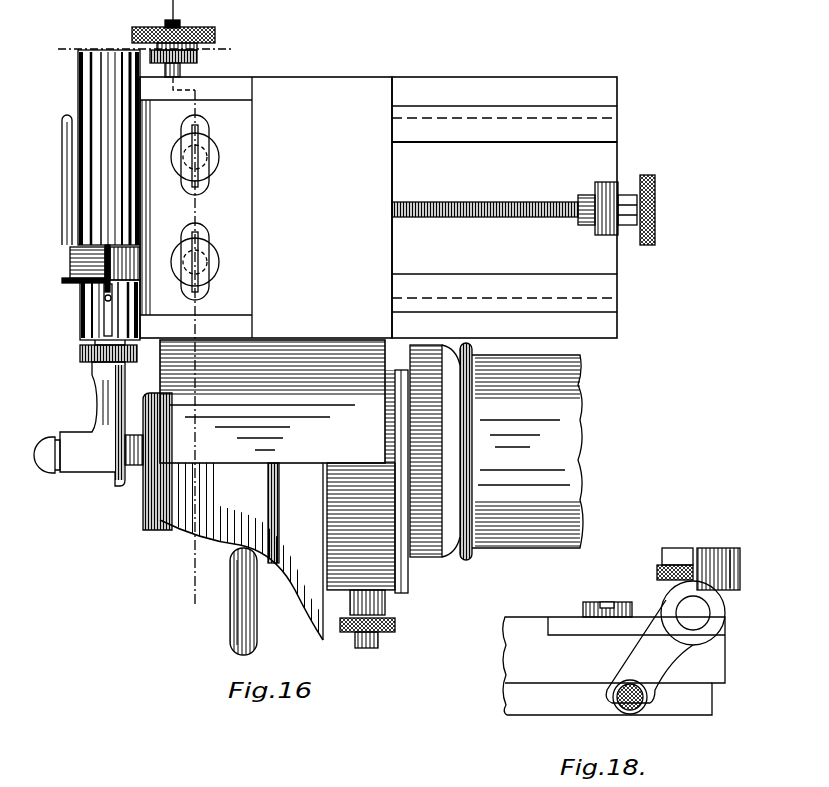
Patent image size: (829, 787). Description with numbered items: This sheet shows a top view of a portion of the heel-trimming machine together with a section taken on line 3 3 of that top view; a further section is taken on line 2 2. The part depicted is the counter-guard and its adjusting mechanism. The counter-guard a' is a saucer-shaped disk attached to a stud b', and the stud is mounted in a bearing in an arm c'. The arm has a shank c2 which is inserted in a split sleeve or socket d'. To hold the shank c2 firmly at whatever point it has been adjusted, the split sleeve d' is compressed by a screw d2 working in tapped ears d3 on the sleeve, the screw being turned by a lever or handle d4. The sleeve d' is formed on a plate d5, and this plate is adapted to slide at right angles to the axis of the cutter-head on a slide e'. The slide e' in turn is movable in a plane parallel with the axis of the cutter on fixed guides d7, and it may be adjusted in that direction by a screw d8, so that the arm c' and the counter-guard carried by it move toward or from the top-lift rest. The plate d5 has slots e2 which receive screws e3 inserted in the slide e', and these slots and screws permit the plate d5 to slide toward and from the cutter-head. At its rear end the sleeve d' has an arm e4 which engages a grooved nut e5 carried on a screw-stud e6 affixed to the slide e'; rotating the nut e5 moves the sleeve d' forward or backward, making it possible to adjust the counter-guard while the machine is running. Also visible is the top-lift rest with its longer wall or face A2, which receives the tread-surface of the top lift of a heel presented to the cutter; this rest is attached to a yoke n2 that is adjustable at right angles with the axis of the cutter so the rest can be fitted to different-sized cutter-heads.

In FIG. 16, the section line 2 2 is at (179, 313).
In FIG. 16, the section line 3 3 is at (136, 317).
In FIG. 16, the screw-stud e6 is at (165, 24).
In FIG. 18, the screw-stud e6 is at (627, 710).
In FIG. 16, the grooved nut e5 is at (205, 28).
In FIG. 18, the grooved nut e5 is at (637, 715).
In FIG. 16, the arm e4 is at (197, 57).
In FIG. 18, the arm e4 is at (650, 662).
In FIG. 16, the slide e' is at (266, 207).
In FIG. 18, the slide e' is at (614, 666).
In FIG. 16, the fixed guides d7 is at (630, 288).
In FIG. 16, the screw d8 is at (523, 203).
In FIG. 16, the lever or handle d4 is at (60, 192).
In FIG. 16, the slots e2 is at (208, 230).
In FIG. 16, the screws e3 is at (207, 265).
In FIG. 18, the screws e3 is at (600, 600).
In FIG. 16, the plate d5 is at (217, 208).
In FIG. 18, the plate d5 is at (591, 601).
In FIG. 16, the screw d2 is at (142, 262).
In FIG. 18, the screw d2 is at (658, 568).
In FIG. 16, the tapped ears d3 is at (142, 285).
In FIG. 18, the tapped ears d3 is at (718, 537).
In FIG. 16, the split sleeve or socket d' is at (85, 312).
In FIG. 18, the split sleeve or socket d' is at (720, 607).
In FIG. 16, the shank c2 is at (82, 360).
In FIG. 18, the shank c2 is at (697, 612).
In FIG. 16, the arm c' is at (101, 442).
In FIG. 16, the stud b' is at (36, 480).
In FIG. 16, the counter-guard a' is at (361, 491).
In FIG. 16, the longer wall or face A2 is at (230, 582).
In FIG. 16, the yoke n2 is at (393, 585).